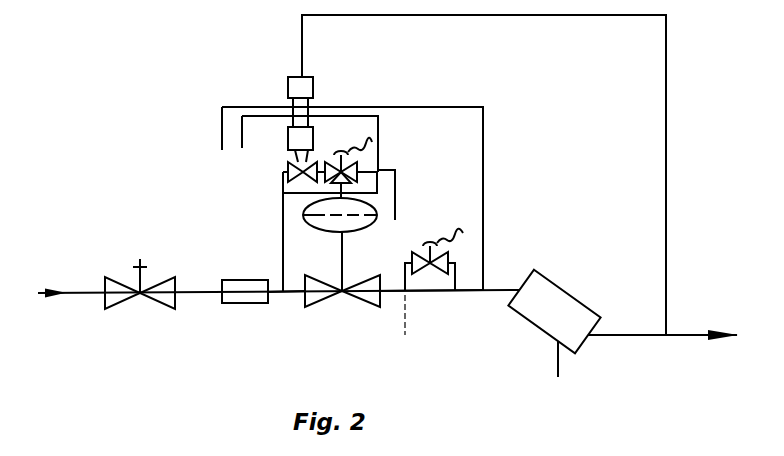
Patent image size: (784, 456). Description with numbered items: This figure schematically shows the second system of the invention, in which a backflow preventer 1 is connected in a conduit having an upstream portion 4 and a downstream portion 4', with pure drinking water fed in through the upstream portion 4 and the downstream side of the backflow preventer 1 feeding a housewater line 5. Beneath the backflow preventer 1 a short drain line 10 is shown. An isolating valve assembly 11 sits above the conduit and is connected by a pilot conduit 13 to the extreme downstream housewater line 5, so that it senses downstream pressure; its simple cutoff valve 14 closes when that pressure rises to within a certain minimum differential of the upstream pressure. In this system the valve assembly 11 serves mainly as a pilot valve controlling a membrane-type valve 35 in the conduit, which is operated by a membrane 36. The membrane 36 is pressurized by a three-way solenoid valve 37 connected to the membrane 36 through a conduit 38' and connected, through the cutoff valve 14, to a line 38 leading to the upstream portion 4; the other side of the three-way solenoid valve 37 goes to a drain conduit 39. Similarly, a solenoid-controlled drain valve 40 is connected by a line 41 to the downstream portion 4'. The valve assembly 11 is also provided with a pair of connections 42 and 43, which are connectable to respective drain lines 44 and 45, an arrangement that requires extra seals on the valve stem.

The backflow preventer 1 is at (555, 298).
The upstream portion 4 is at (284, 328).
The downstream portion 4' is at (431, 320).
The housewater line 5 is at (641, 336).
The drain line 10 is at (556, 353).
The isolating valve assembly 11 is at (318, 88).
The pilot conduit 13 is at (668, 68).
The cutoff valve 14 is at (288, 172).
The membrane-type valve 35 is at (358, 295).
The membrane 36 is at (303, 213).
The three-way solenoid valve 37 is at (355, 164).
The line 38 is at (248, 231).
The conduit 38' is at (278, 192).
The drain conduit 39 is at (395, 193).
The solenoid-controlled drain valve 40 is at (445, 263).
The line 41 is at (455, 280).
The connection 42 is at (355, 117).
The connection 43 is at (430, 108).
The drain line 44 is at (242, 138).
The drain line 45 is at (222, 120).